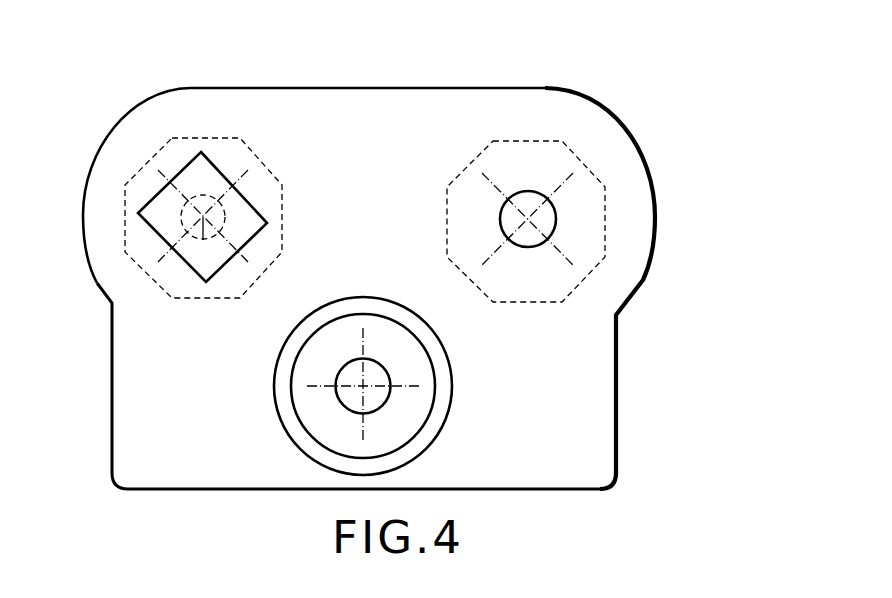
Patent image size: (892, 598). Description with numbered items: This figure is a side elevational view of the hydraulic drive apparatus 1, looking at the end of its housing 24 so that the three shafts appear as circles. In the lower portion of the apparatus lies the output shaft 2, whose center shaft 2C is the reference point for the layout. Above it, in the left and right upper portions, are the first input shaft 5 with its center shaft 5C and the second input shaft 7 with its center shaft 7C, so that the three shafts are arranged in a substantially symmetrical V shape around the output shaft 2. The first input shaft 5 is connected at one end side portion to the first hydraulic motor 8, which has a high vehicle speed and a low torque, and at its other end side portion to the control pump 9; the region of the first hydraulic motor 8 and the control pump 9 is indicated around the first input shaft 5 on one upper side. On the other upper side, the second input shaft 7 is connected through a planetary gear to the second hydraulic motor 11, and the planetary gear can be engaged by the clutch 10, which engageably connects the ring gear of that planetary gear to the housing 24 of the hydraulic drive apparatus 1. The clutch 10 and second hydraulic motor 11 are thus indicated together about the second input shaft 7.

The hydraulic drive apparatus 1 is at (377, 248).
The housing 24 is at (623, 125).
The first hydraulic motor 8 is at (204, 138).
The control pump 9 is at (253, 202).
The first input shaft 5 is at (225, 226).
The center shaft of the first input shaft 5C is at (203, 217).
The clutch 10 is at (608, 221).
The second hydraulic motor 11 is at (605, 210).
The second input shaft 7 is at (556, 221).
The center shaft of the second input shaft 7C is at (528, 219).
The output shaft 2 is at (386, 400).
The center shaft of the output shaft 2C is at (363, 386).